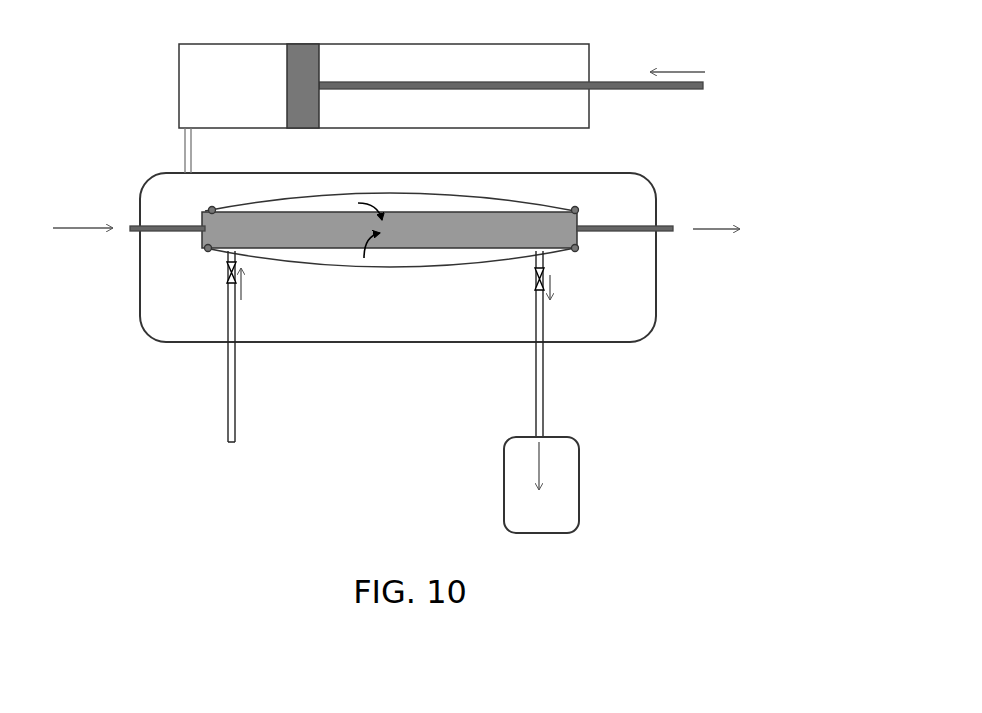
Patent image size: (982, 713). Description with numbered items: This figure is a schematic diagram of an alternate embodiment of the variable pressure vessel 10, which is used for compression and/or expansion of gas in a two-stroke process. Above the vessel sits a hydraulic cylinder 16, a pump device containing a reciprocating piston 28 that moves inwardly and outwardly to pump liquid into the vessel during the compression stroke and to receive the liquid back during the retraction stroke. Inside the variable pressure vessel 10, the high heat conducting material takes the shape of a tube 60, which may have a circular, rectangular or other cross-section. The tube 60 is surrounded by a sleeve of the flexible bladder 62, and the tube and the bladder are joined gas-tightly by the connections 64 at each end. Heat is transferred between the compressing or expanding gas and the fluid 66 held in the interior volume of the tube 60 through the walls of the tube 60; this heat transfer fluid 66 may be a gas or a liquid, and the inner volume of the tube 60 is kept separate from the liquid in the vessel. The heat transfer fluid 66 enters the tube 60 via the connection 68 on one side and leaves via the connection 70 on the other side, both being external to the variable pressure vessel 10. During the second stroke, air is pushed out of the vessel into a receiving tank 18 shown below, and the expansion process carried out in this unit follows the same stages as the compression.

The variable pressure vessel 10 is at (645, 343).
The hydraulic cylinder 16 is at (563, 44).
The receiving tank 18 is at (580, 462).
The reciprocating piston 28 is at (322, 57).
The tube 60 is at (398, 248).
The flexible bladder 62 is at (357, 268).
The connections 64 is at (208, 248).
The heat transfer fluid 66 is at (530, 223).
The connection 68 is at (170, 232).
The connection 70 is at (667, 226).